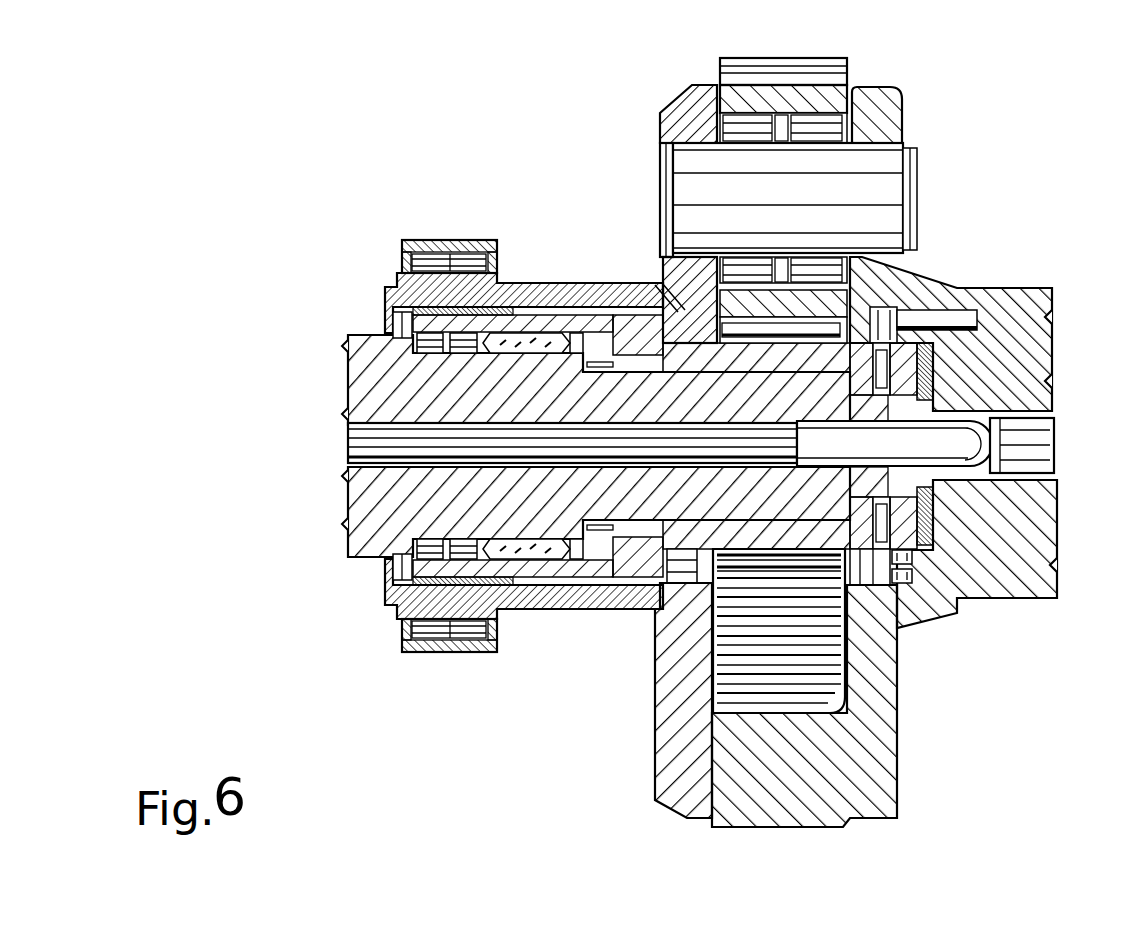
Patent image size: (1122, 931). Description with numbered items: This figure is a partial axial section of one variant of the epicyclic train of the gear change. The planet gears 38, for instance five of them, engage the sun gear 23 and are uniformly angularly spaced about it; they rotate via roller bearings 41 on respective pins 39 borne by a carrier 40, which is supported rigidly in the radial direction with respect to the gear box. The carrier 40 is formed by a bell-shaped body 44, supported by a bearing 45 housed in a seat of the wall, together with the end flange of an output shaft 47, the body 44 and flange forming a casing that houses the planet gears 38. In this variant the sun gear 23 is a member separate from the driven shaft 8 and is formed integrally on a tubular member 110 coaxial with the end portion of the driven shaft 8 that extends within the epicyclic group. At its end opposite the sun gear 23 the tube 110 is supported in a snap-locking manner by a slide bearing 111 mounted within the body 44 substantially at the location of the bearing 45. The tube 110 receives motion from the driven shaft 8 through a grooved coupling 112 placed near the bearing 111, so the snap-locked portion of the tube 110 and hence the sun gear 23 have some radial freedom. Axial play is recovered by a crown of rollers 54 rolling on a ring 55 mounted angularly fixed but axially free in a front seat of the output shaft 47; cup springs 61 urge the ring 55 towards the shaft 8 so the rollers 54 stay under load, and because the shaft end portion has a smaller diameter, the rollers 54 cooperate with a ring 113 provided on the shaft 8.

The driven shaft 8 is at (373, 487).
The sun gear 23 is at (827, 347).
The planet gears 38 is at (822, 97).
The pins 39 is at (870, 193).
The carrier 40 is at (897, 808).
The roller bearings 41 is at (850, 121).
The bell-shaped body 44 is at (547, 300).
The bearing 45 is at (468, 300).
The output shaft 47 is at (1027, 350).
The crown of rollers 54 is at (917, 347).
The ring 55 is at (905, 550).
The cup springs 61 is at (937, 528).
The tubular member 110 is at (628, 308).
The slide bearing 111 is at (470, 345).
The grooved coupling 112 is at (493, 350).
The ring 113 is at (865, 580).